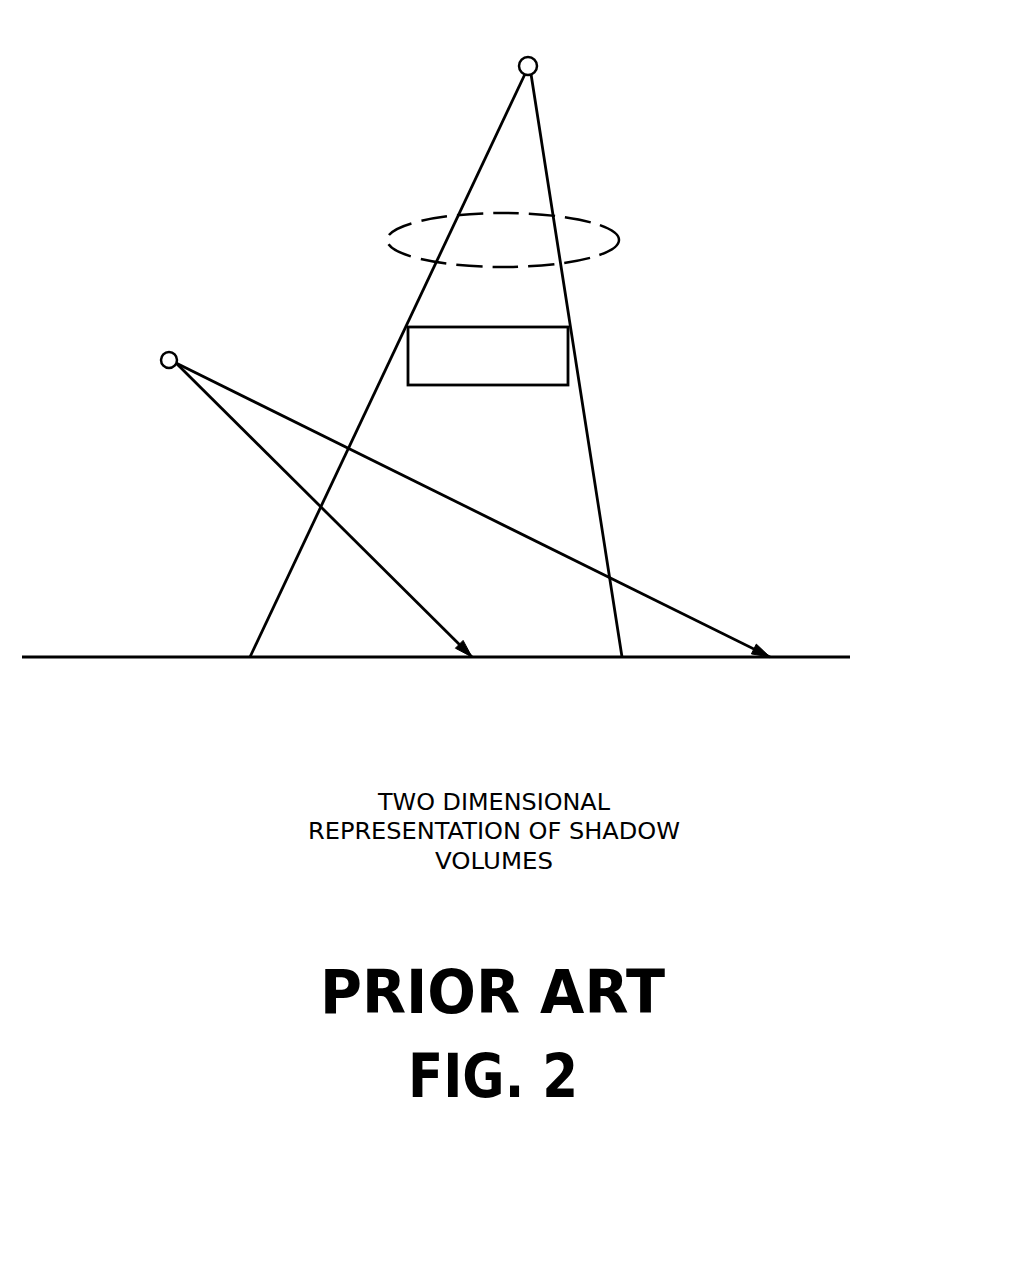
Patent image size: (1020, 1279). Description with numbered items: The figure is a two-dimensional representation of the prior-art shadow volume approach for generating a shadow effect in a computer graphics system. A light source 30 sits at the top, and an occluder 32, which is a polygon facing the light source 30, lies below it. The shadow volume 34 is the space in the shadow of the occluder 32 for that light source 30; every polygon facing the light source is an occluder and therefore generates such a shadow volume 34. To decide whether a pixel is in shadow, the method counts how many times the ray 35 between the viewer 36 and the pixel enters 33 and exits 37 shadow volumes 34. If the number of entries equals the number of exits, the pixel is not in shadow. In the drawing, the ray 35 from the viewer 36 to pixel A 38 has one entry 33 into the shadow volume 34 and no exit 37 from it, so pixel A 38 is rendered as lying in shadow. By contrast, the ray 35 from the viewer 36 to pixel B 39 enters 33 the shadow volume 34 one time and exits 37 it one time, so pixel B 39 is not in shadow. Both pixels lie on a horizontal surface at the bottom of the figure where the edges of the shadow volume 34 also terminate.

The light source 30 is at (536, 59).
The occluder 32 is at (472, 326).
The entry 33 is at (348, 447).
The shadow volume 34 is at (517, 447).
The ray 35 is at (265, 407).
The viewer 36 is at (161, 360).
The exit 37 is at (613, 575).
The pixel A 38 is at (465, 660).
The pixel B 39 is at (763, 660).